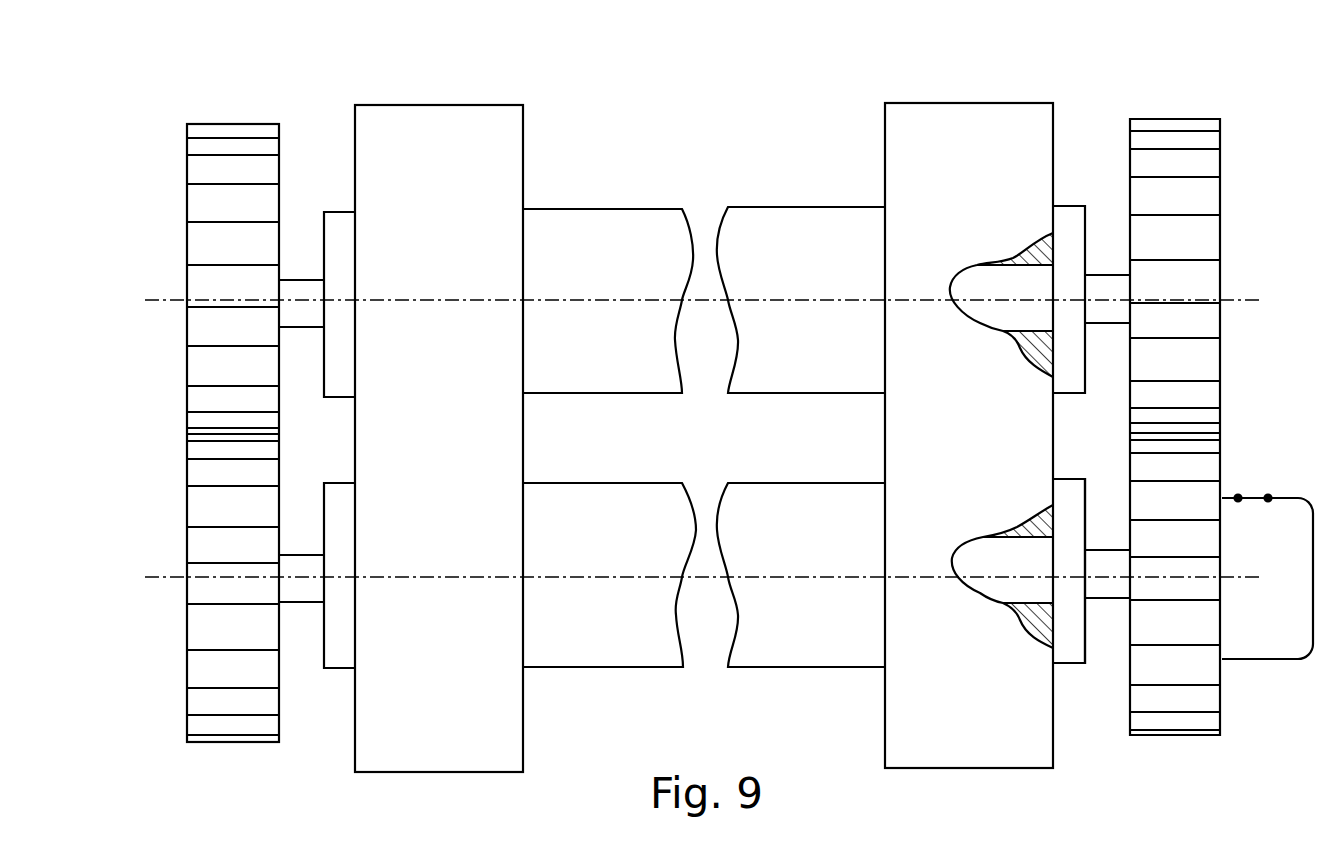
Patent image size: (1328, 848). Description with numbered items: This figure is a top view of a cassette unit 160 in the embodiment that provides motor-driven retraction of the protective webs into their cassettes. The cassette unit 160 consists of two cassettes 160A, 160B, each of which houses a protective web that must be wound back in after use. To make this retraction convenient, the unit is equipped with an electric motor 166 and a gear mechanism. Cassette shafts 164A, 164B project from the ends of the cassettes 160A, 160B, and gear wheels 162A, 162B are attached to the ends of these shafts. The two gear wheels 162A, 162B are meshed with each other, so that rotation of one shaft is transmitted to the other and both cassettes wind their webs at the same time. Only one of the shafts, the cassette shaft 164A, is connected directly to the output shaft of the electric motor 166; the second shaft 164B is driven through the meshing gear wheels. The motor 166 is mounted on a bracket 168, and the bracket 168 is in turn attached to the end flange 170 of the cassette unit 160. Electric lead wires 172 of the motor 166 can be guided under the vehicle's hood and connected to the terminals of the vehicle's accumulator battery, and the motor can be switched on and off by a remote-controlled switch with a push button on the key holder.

The cassette unit 160 is at (675, 162).
The cassette 160A is at (603, 238).
The cassette 160B is at (612, 613).
The gear wheel 162A is at (1186, 167).
The gear wheel 162B is at (1147, 723).
The cassette shaft 164A is at (1032, 583).
The cassette shaft 164B is at (1013, 290).
The electric motor 166 is at (1257, 630).
The bracket 168 is at (1090, 533).
The end flange 170 is at (1070, 640).
The electric lead wires 172 is at (1268, 498).